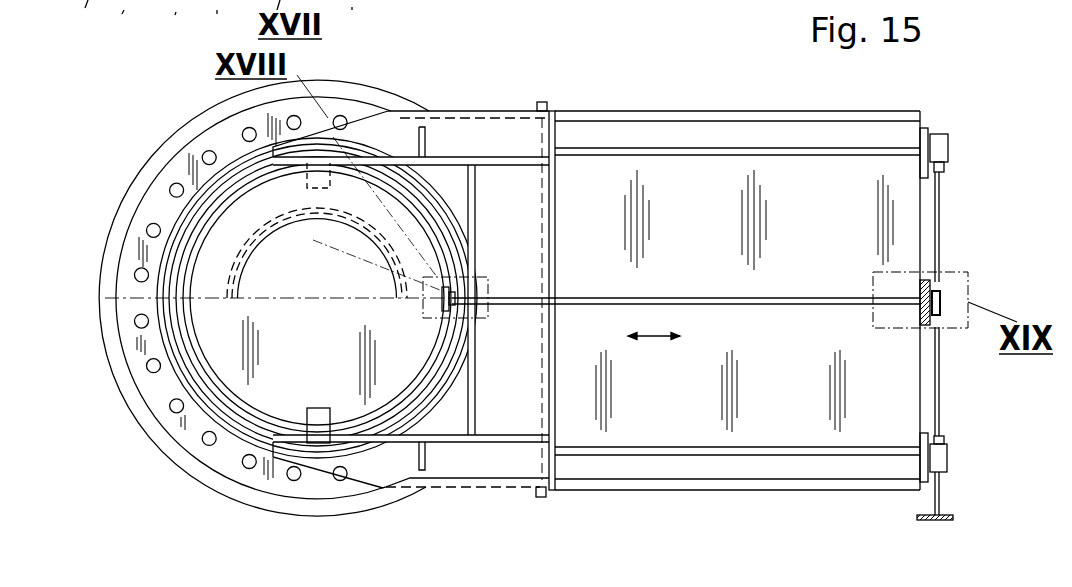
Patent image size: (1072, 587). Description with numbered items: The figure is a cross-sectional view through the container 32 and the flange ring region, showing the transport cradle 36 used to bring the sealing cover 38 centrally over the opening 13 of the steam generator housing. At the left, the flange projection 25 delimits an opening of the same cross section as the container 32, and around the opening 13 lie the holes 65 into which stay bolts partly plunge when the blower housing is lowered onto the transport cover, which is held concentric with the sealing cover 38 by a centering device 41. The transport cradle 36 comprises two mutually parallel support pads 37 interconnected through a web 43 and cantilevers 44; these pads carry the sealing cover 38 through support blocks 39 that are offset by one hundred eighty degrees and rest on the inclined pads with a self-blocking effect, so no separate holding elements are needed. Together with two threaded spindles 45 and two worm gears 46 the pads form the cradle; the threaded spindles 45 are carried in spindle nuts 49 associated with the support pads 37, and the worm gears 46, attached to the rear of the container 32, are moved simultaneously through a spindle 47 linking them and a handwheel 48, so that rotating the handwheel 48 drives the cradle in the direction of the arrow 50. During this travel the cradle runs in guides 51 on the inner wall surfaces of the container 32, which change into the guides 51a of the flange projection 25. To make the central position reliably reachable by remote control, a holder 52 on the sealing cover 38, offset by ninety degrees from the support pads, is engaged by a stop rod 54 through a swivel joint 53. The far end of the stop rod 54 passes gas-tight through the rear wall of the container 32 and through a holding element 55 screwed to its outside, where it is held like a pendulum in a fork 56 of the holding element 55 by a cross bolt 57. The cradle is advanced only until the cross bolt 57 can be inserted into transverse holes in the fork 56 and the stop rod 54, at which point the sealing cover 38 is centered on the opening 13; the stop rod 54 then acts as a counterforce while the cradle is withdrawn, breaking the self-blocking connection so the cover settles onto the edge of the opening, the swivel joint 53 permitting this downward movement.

The fork 56 is at (75, 7).
The sealing cover 38 is at (131, 0).
The opening 13 is at (179, 0).
The centering device 41 is at (218, 0).
The support blocks 39 is at (350, 0).
The support pads 37 is at (407, 0).
The flange projection 25 is at (446, 106).
The guides of the flange projection 51a is at (497, 116).
The cantilevers 44 is at (442, 192).
The web 43 is at (478, 200).
The spindle nuts 49 is at (556, 148).
The transport cradle 36 is at (561, 207).
The guides 51 is at (649, 112).
The container 32 is at (668, 190).
The threaded spindles 45 is at (742, 150).
The worm gears 46 is at (948, 150).
The spindle 47 is at (940, 222).
The holding element 55 is at (945, 288).
The cross bolt 57 is at (940, 318).
The handwheel 48 is at (952, 515).
The stop rod 54 is at (722, 308).
The arrow 50 is at (663, 336).
The holes 65 is at (203, 152).
The holder 52 is at (440, 295).
The swivel joint 53 is at (216, 166).